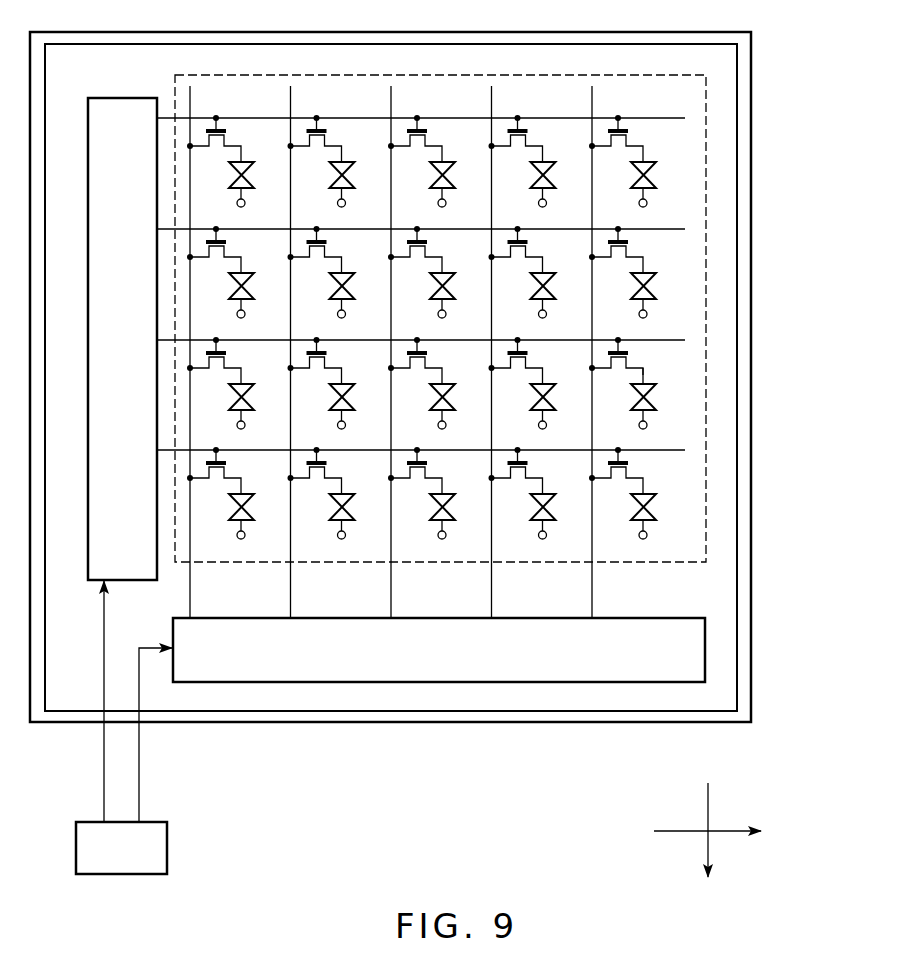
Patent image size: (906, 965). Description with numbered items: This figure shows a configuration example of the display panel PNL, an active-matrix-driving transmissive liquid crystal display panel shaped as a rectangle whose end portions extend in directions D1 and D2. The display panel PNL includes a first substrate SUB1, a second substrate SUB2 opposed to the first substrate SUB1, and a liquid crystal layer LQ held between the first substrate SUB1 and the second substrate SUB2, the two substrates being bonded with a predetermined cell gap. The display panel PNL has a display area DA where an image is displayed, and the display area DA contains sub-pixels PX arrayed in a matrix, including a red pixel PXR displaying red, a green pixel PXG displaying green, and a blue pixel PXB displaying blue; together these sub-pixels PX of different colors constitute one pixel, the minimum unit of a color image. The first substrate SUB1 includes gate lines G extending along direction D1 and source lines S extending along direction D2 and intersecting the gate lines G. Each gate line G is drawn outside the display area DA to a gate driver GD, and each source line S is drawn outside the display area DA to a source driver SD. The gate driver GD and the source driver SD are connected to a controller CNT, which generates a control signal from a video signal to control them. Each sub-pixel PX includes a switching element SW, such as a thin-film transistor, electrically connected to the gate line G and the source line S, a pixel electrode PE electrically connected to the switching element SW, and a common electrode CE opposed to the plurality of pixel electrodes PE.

The red pixel PXR is at (258, 140).
The green pixel PXG is at (362, 140).
The blue pixel PXB is at (463, 140).
The source line S is at (191, 95).
The gate line G is at (647, 118).
The gate driver GD is at (122, 339).
The source driver SD is at (439, 650).
The controller CNT is at (124, 727).
The sub-pixel PX is at (694, 392).
The switching element SW is at (618, 371).
The pixel electrode PE is at (645, 373).
The liquid crystal layer LQ is at (656, 400).
The common electrode CE is at (640, 427).
The display area DA is at (706, 524).
The first substrate SUB1 is at (318, 723).
The second substrate SUB2 is at (423, 712).
The display panel PNL is at (390, 409).
The direction D1 is at (725, 831).
The direction D2 is at (711, 843).